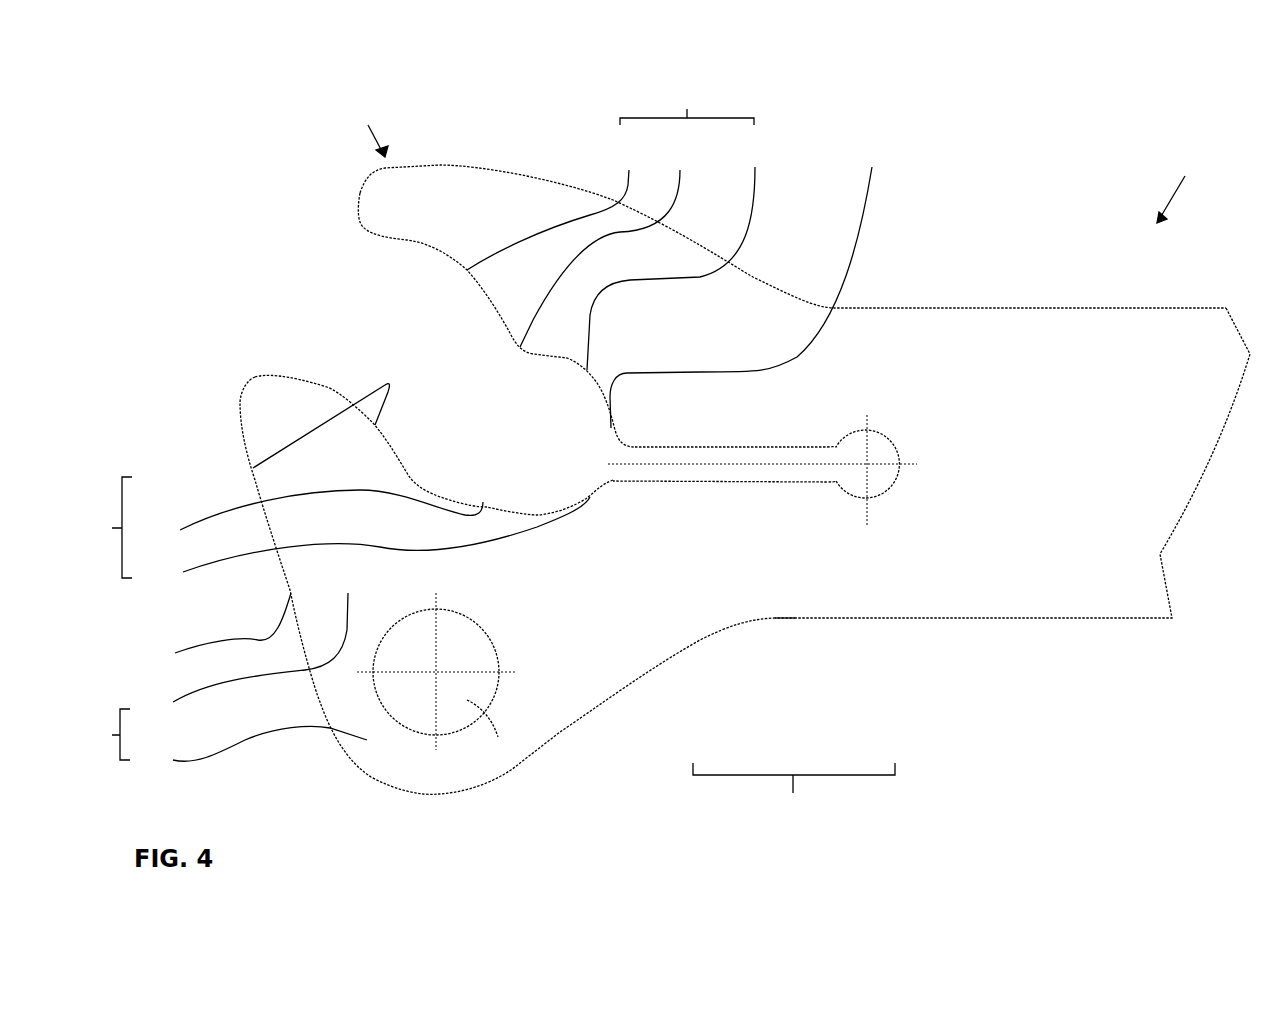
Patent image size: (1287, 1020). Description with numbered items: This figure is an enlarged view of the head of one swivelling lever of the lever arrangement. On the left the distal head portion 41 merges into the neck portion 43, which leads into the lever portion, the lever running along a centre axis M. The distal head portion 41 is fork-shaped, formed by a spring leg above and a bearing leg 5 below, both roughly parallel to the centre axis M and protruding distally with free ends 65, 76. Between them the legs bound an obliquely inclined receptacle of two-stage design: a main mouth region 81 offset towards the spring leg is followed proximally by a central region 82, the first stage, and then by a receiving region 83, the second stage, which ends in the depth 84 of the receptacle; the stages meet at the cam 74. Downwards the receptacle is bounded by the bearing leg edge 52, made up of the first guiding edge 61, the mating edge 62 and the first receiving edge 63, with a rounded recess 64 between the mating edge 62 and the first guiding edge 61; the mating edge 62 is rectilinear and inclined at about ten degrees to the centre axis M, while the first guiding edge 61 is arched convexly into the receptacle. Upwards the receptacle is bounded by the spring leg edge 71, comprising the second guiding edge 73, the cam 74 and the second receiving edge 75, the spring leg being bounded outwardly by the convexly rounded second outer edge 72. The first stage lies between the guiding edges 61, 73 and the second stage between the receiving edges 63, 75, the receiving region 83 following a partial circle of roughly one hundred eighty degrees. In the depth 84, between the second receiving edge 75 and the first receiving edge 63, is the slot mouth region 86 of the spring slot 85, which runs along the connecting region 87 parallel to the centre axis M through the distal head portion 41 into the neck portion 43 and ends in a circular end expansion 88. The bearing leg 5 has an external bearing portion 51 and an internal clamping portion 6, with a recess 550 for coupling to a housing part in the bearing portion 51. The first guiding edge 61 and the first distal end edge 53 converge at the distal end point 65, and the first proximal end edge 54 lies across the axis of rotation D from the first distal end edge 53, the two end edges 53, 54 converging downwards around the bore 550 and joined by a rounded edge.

The distal head portion 41 is at (733, 441).
The neck portion 43 is at (1012, 378).
The free end of the spring leg 76 is at (360, 193).
The second outer edge 72 is at (442, 168).
The spring leg edge 71 is at (616, 220).
The second guiding edge 73 is at (553, 200).
The cam 74 is at (609, 239).
The second receiving edge 75 is at (676, 250).
The depth of the receptacle 84 is at (746, 279).
The distal end point of the bearing leg 65 is at (255, 377).
The main mouth region 81 is at (277, 303).
The central region 82 is at (412, 373).
The rounded recess 64 is at (412, 478).
The receiving region 83 is at (527, 478).
The bearing leg edge 52 is at (335, 487).
The first guiding edge 61 is at (253, 468).
The mating edge 62 is at (309, 519).
The first receiving edge 63 is at (363, 544).
The first distal end edge 53 is at (213, 632).
The bearing leg 5 is at (226, 684).
The bearing portion 51 is at (242, 658).
The clamping portion 6 is at (255, 751).
The axis of rotation D is at (436, 673).
The recess 550 is at (467, 700).
The first proximal end edge 54 is at (592, 712).
The spring slot 85 is at (757, 647).
The slot mouth region 86 is at (620, 472).
The connecting region 87 is at (725, 472).
The centre axis M is at (797, 463).
The end expansion 88 is at (883, 480).